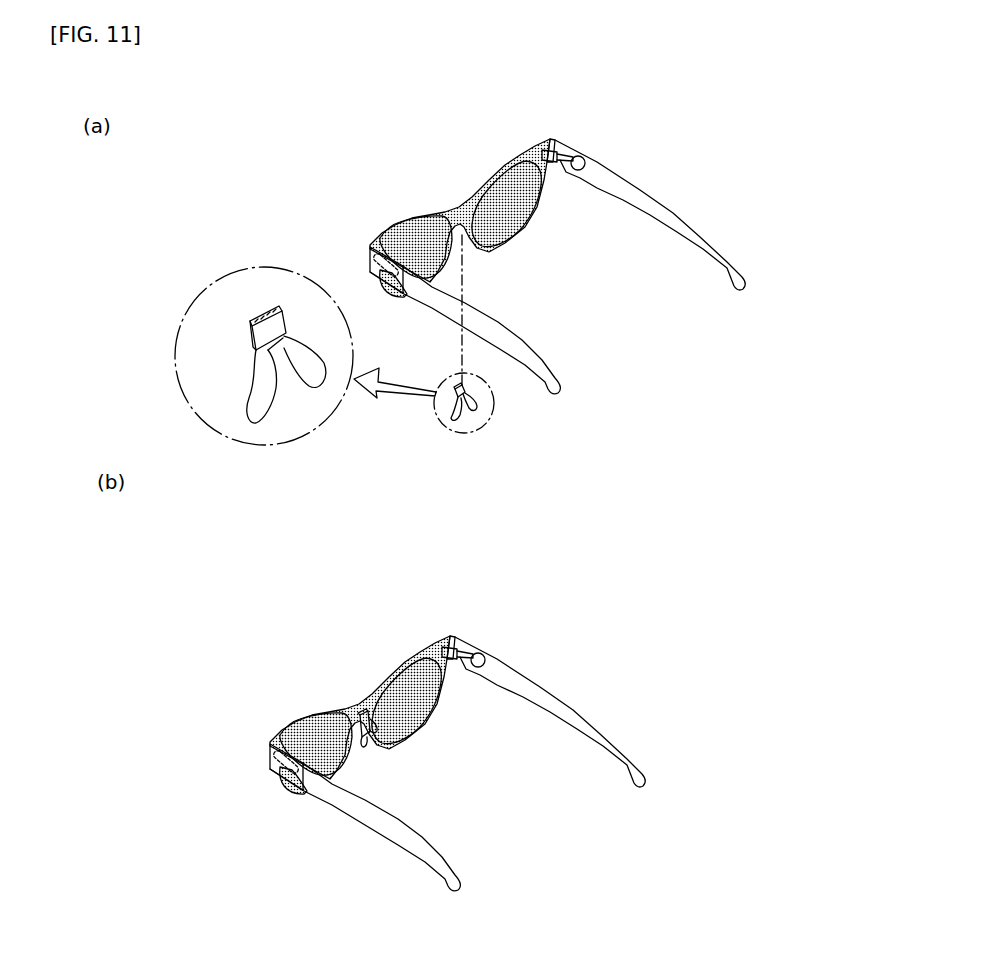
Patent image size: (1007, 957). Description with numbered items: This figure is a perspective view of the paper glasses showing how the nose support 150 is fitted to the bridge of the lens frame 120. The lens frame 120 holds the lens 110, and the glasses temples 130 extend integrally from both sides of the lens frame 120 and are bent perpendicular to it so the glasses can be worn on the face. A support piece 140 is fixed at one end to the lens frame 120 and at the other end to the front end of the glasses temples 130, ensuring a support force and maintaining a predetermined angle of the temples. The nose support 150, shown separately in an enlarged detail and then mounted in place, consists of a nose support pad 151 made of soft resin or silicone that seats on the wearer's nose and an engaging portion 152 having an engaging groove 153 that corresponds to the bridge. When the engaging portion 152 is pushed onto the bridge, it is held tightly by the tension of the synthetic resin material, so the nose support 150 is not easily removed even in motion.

The lens 110 is at (509, 215).
The lens frame 120 is at (518, 155).
The glasses temples 130 is at (608, 186).
The support piece 140 is at (561, 155).
The nose support 150 is at (466, 390).
The nose support pad 151 is at (254, 393).
The engaging portion 152 is at (282, 337).
The engaging groove 153 is at (260, 333).